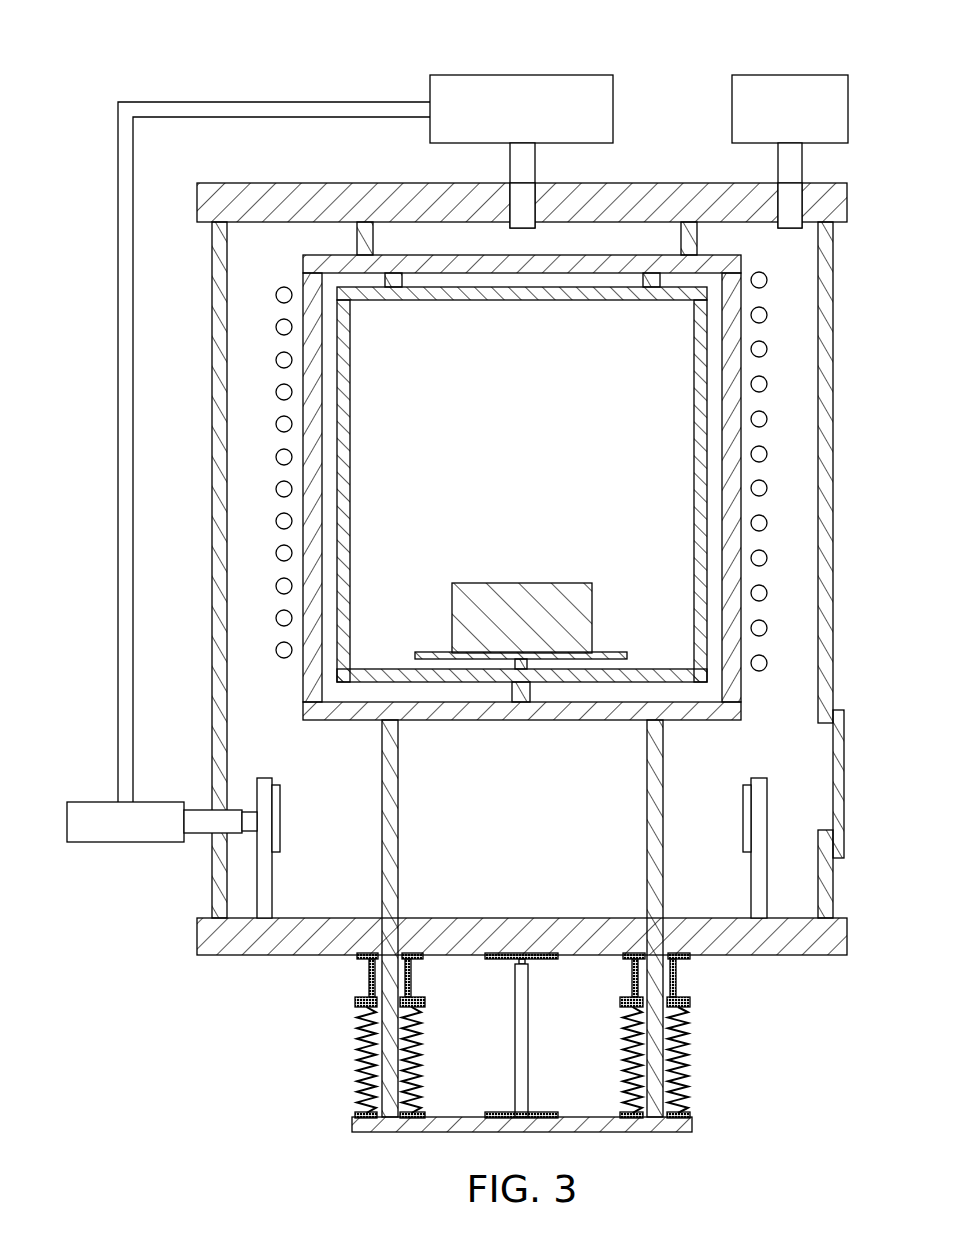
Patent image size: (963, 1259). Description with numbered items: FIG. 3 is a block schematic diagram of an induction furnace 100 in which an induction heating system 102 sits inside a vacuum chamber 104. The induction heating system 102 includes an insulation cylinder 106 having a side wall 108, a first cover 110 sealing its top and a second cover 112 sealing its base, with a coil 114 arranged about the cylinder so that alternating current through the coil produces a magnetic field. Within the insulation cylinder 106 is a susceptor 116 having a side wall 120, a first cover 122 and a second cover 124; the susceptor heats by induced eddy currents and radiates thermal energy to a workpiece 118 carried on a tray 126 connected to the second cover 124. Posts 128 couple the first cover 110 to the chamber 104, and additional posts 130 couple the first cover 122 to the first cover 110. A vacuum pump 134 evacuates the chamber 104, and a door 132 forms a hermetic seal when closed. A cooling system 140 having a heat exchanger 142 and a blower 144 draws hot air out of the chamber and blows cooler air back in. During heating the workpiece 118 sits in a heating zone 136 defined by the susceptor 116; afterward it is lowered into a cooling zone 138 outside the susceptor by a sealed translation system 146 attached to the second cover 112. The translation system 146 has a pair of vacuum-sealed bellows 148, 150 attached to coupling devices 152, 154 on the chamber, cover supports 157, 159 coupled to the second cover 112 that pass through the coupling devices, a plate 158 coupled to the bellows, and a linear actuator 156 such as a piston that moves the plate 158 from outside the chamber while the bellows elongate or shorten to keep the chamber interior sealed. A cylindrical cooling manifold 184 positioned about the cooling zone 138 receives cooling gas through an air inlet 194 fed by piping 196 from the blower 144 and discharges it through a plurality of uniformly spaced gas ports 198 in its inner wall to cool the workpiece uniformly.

The induction furnace 100 is at (362, 55).
The induction heating system 102 is at (522, 546).
The chamber 104 is at (397, 178).
The insulation cylinder 106 is at (302, 276).
The side wall 108 is at (523, 467).
The first cover 110 is at (645, 252).
The second cover 112 is at (336, 722).
The coil 114 is at (277, 332).
The susceptor 116 is at (521, 502).
The workpiece 118 is at (528, 583).
The side wall 120 is at (522, 484).
The first cover 122 is at (528, 300).
The second cover 124 is at (637, 653).
The tray 126 is at (428, 651).
The posts 128 is at (375, 240).
The additional posts 130 is at (412, 288).
The door 132 is at (826, 795).
The vacuum pump 134 is at (732, 82).
The heating zone 136 is at (510, 603).
The cooling zone 138 is at (473, 918).
The cooling system 140 is at (157, 88).
The heat exchanger 142 is at (614, 130).
The blower 144 is at (160, 816).
The translation system 146 is at (483, 1042).
The bellows 148 is at (362, 1060).
The bellows 150 is at (682, 1052).
The coupling device 152 is at (364, 977).
The coupling device 154 is at (673, 977).
The linear actuator 156 is at (512, 1035).
The cover support 157 is at (400, 810).
The plate 158 is at (588, 1112).
The cover support 159 is at (646, 802).
The cooling manifold 184 is at (514, 802).
The air inlet 194 is at (258, 800).
The piping 196 is at (236, 834).
The gas ports 198 is at (282, 807).